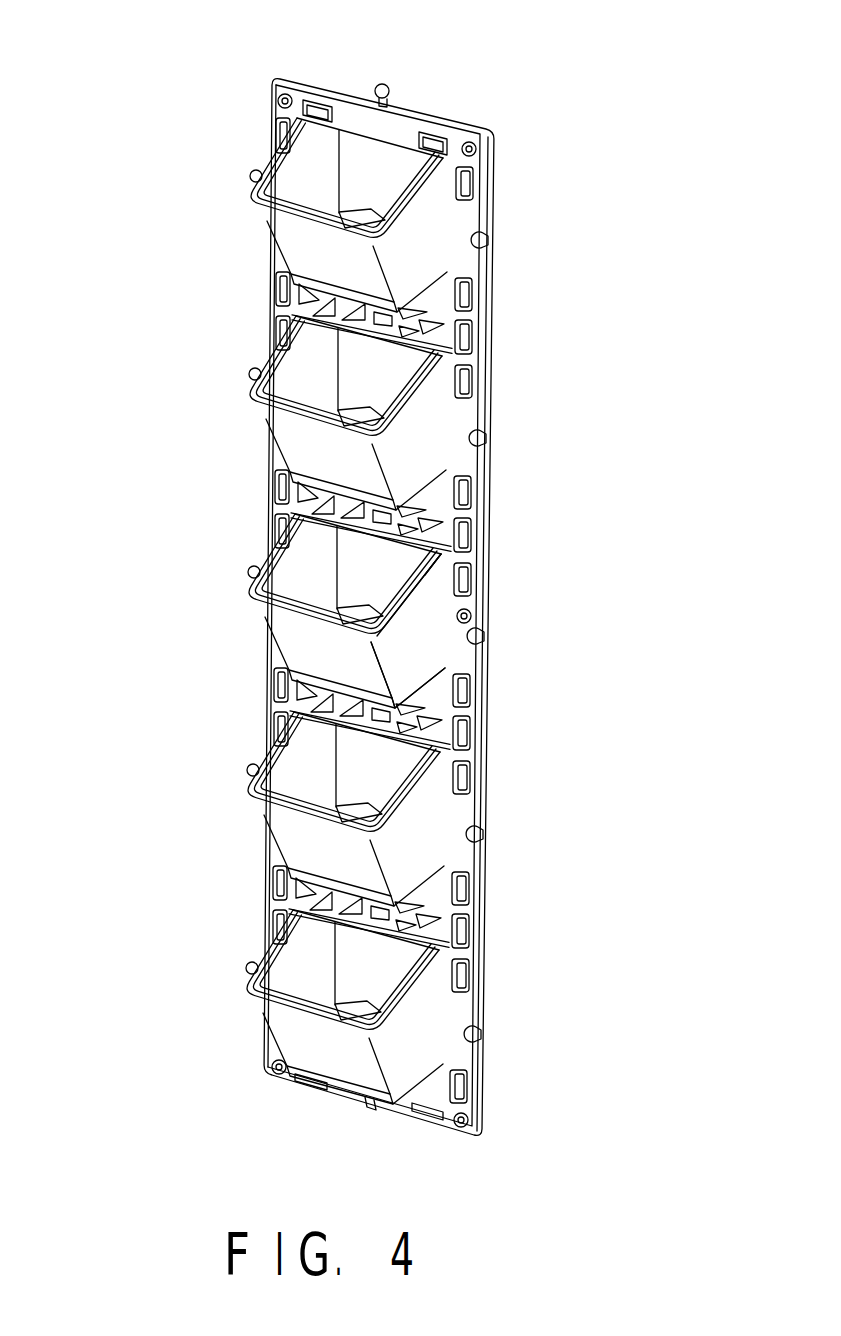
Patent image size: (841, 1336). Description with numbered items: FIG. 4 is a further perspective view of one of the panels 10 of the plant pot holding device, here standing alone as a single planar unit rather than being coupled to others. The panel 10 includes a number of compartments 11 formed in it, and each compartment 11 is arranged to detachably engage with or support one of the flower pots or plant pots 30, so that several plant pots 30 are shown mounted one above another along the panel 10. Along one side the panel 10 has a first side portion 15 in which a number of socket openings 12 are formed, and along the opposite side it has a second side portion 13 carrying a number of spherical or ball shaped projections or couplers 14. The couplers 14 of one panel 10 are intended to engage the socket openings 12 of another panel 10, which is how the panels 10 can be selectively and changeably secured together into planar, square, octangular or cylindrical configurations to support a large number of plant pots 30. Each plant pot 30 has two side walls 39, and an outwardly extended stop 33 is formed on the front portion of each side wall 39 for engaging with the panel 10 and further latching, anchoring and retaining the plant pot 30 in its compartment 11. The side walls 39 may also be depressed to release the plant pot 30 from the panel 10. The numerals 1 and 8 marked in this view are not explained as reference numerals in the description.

The vertical planter assembly 1 is at (577, 95).
The section line / hanger peg 8 is at (383, 77).
The panel 10 is at (492, 605).
The compartment 11 is at (420, 1078).
The socket opening 12 is at (480, 437).
The second side portion 13 is at (504, 188).
The coupler 14 is at (252, 569).
The first side portion 15 is at (252, 134).
The plant pot 30 is at (292, 830).
The stop 33 is at (440, 553).
The side wall 39 is at (427, 635).